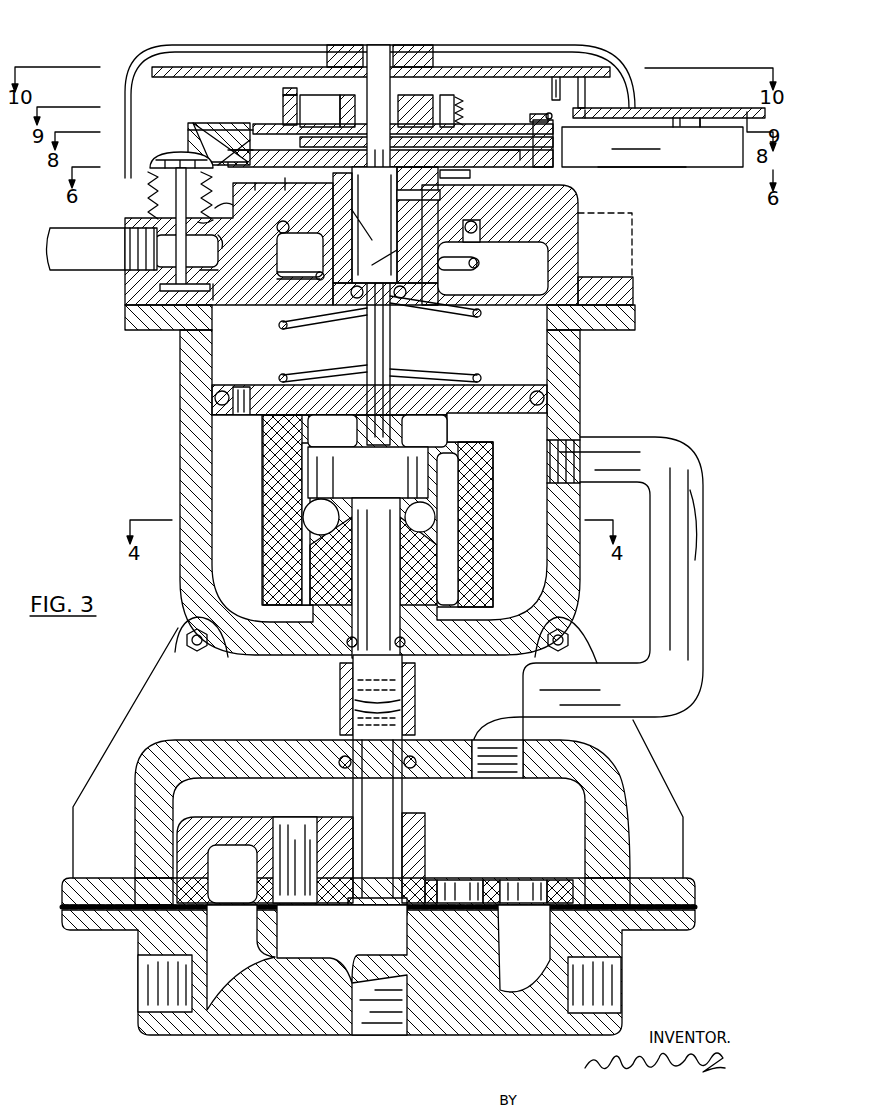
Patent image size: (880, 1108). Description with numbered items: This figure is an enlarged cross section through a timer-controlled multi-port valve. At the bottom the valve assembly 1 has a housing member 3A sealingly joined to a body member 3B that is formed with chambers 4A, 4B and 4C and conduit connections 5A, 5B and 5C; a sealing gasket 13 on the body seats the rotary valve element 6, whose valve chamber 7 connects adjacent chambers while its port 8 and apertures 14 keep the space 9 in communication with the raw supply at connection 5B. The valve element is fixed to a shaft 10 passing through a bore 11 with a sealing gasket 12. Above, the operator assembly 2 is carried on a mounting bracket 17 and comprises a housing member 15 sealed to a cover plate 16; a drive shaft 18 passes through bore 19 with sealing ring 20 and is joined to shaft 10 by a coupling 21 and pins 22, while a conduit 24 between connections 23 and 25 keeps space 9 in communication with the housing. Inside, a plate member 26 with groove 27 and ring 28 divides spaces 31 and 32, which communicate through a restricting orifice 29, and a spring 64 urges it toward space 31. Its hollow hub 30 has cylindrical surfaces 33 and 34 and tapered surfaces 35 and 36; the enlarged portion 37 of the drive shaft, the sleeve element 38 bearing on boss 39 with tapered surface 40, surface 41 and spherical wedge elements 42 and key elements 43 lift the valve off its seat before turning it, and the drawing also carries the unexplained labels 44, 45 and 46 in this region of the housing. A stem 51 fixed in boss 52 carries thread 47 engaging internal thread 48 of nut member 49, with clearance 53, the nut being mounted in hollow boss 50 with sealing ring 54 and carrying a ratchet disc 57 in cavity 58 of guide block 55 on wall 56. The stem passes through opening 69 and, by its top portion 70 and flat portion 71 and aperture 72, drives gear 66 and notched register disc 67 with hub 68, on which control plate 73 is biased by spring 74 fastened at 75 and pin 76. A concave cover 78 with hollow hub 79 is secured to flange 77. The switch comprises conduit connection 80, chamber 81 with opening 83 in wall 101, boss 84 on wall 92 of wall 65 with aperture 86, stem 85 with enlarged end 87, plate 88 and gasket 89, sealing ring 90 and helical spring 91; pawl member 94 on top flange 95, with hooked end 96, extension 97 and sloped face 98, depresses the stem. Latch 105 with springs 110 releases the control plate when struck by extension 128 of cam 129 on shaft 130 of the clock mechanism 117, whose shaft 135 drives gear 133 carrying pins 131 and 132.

The valve assembly 1 is at (83, 935).
The operator assembly 2 is at (178, 460).
The housing member 3A is at (143, 762).
The body member 3B is at (138, 1029).
The chamber 4A is at (217, 940).
The chamber 4B is at (316, 940).
The chamber 4C is at (507, 940).
The conduit connection 5A is at (138, 974).
The conduit connection 5B is at (362, 1036).
The conduit connection 5C is at (624, 986).
The rotary valve element 6 is at (240, 818).
The valve chamber 7 is at (220, 880).
The port 8 is at (518, 880).
The space 9 is at (477, 825).
The shaft 10 is at (403, 808).
The bore 11 is at (351, 792).
The sealing gasket 12 is at (418, 758).
The sealing gasket 13 is at (561, 880).
The apertures 14 is at (283, 858).
The housing member 15 is at (180, 422).
The cover plate 16 is at (572, 212).
The mounting bracket 17 is at (136, 699).
The drive shaft 18 is at (376, 610).
The bore 19 is at (376, 578).
The sealing ring 20 is at (376, 634).
The coupling 21 is at (340, 702).
The transverse fastening pins 22 is at (416, 690).
The conduit connection 23 is at (562, 440).
The conduit 24 is at (637, 438).
The conduit connection 25 is at (501, 778).
The plate member 26 is at (273, 383).
The peripheral groove 27 is at (532, 388).
The ring 28 is at (537, 426).
The restricting orifice 29 is at (242, 386).
The hollow concentric hub 30 is at (493, 542).
The space 31 is at (521, 513).
The space 32 is at (434, 362).
The inner cylindrical surface 33 is at (305, 566).
The inner cylindrical surface 34 is at (303, 515).
The tapered surface 35 is at (302, 500).
The tapered surface 36 is at (305, 534).
The enlarged portion 37 is at (386, 470).
The sleeve element 38 is at (346, 552).
The boss 39 is at (360, 585).
The tapered surface 40 is at (335, 528).
The surface 41 is at (342, 499).
The spherical wedge elements 42 is at (340, 508).
The key elements 43 is at (456, 572).
The piston head 44 is at (320, 442).
The flange 45 is at (336, 658).
The lug 46 is at (297, 659).
The helical thread 47 is at (352, 253).
The internal thread 48 is at (340, 196).
The nut member 49 is at (420, 197).
The hollow boss 50 is at (322, 255).
The stem 51 is at (366, 346).
The boss 52 is at (405, 436).
The clearance 53 is at (410, 210).
The sealing ring 54 is at (432, 291).
The guide block 55 is at (553, 160).
The wall 56 is at (257, 184).
The ratchet disc 57 is at (460, 176).
The circular cavity 58 is at (414, 168).
The spring 64 is at (478, 316).
The wall 65 is at (481, 228).
The gear 66 is at (512, 167).
The notched register disc 67 is at (262, 126).
The hollow hub 68 is at (408, 105).
The circular opening 69 is at (345, 156).
The top portion 70 is at (327, 111).
The flat portion 71 is at (380, 222).
The central aperture 72 is at (378, 245).
The control plate 73 is at (288, 130).
The spring 74 is at (448, 112).
The fastening point 75 is at (450, 98).
The pin 76 is at (285, 92).
The flange 77 is at (633, 293).
The concave cover 78 is at (497, 47).
The hollow hub 79 is at (398, 47).
The conduit connection 80 is at (112, 270).
The chamber 81 is at (186, 251).
The circular opening 83 is at (205, 270).
The boss 84 is at (208, 195).
The stem 85 is at (214, 213).
The central aperture 86 is at (176, 195).
The enlarged end 87 is at (162, 159).
The circular plate 88 is at (163, 287).
The gasket 89 is at (213, 284).
The sealing ring 90 is at (221, 240).
The helical spring 91 is at (147, 202).
The wall 92 is at (212, 226).
The pawl member 94 is at (188, 130).
The top flange 95 is at (286, 180).
The hooked end 96 is at (243, 140).
The extension 97 is at (228, 150).
The sloped face 98 is at (190, 143).
The wall 101 is at (245, 278).
The latch 105 is at (526, 115).
The springs 110 is at (546, 113).
The clock mechanism 117 is at (722, 167).
The extension 128 is at (592, 110).
The cam 129 is at (663, 108).
The shaft 130 is at (690, 118).
The pin 131 is at (556, 75).
The pin 132 is at (440, 50).
The gear 133 is at (193, 68).
The shaft 135 is at (582, 76).